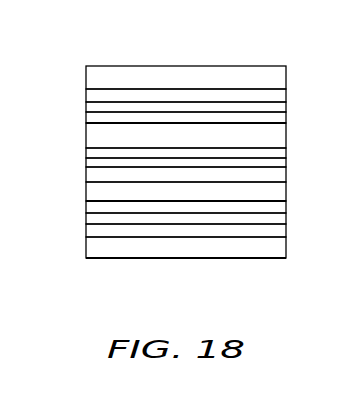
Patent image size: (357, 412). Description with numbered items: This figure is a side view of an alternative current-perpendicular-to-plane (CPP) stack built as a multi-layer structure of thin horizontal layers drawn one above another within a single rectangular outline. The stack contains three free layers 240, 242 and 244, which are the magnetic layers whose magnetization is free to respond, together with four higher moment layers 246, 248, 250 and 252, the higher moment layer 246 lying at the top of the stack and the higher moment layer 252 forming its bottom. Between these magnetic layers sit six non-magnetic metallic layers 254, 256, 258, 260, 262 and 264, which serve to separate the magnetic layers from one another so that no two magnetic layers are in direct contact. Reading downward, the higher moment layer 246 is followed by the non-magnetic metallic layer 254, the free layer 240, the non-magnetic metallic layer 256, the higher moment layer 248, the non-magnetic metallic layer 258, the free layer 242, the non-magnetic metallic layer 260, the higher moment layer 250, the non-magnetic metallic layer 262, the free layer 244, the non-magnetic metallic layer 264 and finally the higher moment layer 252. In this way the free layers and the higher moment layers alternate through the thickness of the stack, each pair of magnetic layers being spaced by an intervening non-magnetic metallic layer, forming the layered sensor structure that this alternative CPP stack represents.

The higher moment layer 246 is at (114, 72).
The non-magnetic metallic layer 254 is at (140, 93).
The free layer 240 is at (93, 107).
The non-magnetic metallic layer 256 is at (93, 118).
The higher moment layer 248 is at (100, 137).
The non-magnetic metallic layer 258 is at (190, 152).
The free layer 242 is at (95, 165).
The non-magnetic metallic layer 260 is at (247, 173).
The higher moment layer 250 is at (98, 193).
The non-magnetic metallic layer 262 is at (239, 208).
The free layer 244 is at (92, 219).
The non-magnetic metallic layer 264 is at (87, 230).
The higher moment layer 252 is at (107, 253).